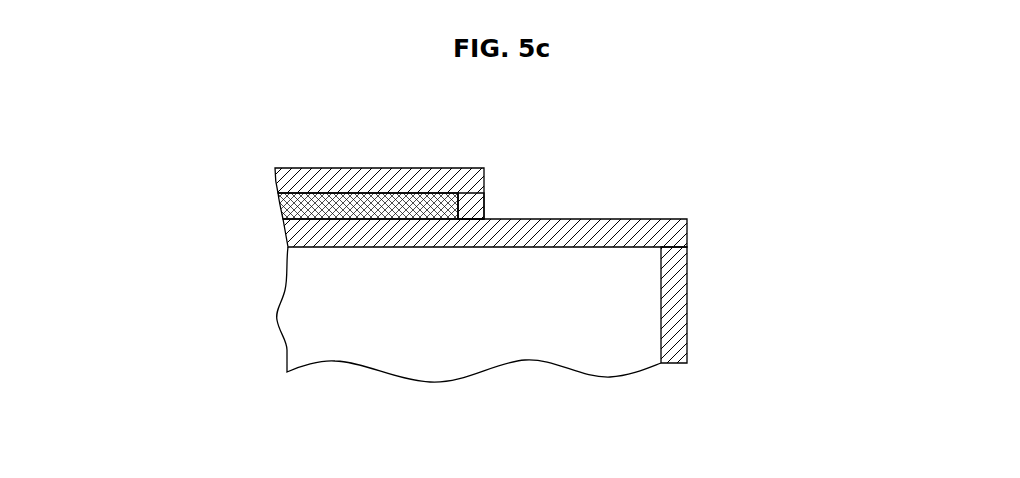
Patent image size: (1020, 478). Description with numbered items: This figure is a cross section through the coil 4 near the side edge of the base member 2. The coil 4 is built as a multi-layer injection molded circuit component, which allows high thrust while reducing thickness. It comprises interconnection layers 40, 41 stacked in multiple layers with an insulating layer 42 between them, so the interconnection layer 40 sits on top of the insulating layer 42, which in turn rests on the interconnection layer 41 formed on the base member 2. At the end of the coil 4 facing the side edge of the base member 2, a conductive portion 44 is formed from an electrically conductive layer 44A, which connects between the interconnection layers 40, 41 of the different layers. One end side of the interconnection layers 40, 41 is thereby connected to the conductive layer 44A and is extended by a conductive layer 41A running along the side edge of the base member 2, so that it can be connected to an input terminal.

The base member 2 is at (277, 298).
The coil 4 is at (486, 229).
The interconnection layer 40 is at (342, 168).
The interconnection layer 41 is at (650, 219).
The conductive layer 41A is at (687, 295).
The insulating layer 42 is at (278, 207).
The conductive portion 44 is at (511, 160).
The conductive layer 44A is at (487, 188).